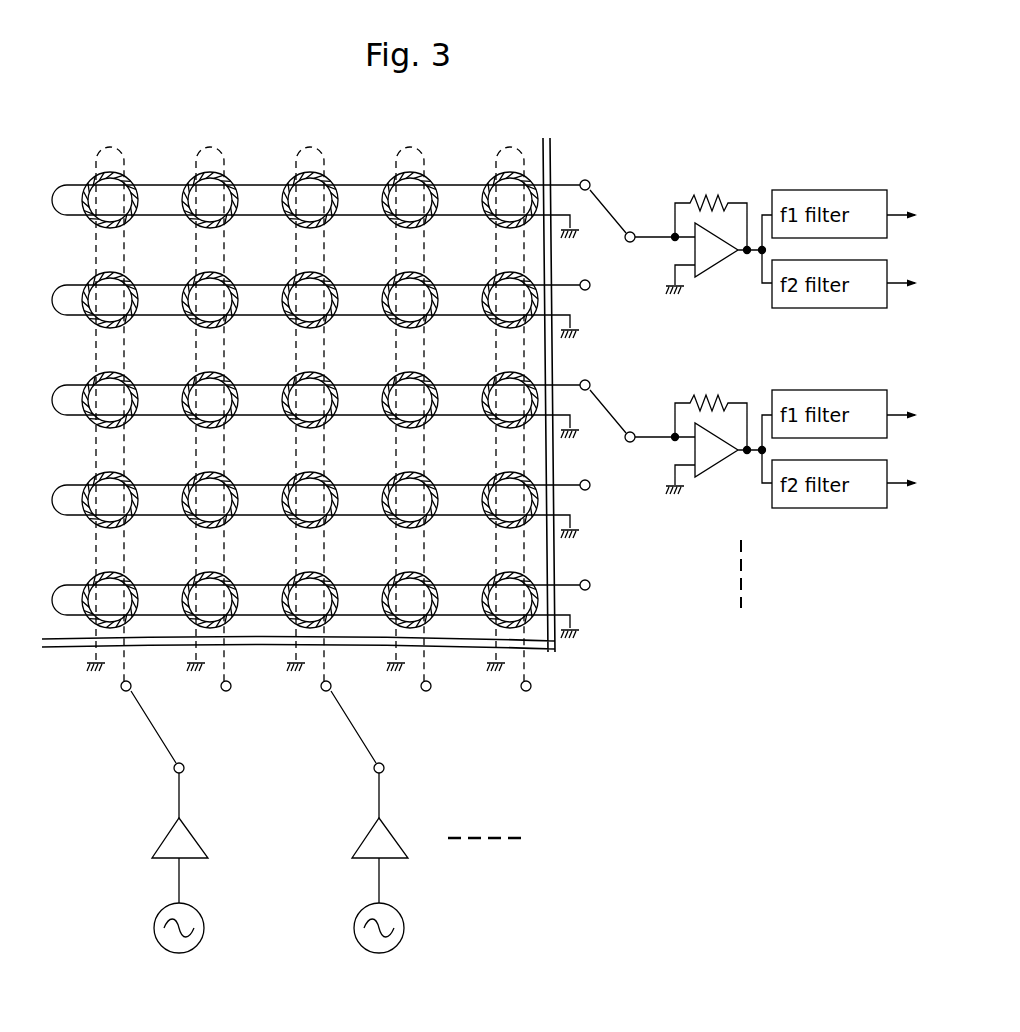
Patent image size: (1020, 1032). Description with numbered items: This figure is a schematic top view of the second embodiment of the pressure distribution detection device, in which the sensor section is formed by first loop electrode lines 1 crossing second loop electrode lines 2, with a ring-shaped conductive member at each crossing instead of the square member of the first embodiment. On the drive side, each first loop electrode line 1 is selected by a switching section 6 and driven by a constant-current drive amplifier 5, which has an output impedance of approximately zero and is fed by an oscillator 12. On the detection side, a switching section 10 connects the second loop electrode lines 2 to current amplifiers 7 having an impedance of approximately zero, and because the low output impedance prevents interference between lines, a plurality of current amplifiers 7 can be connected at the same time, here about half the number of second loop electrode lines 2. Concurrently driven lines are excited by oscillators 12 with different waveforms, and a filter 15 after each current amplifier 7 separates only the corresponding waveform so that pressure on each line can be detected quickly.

The first loop electrode lines 1 is at (115, 147).
The second loop electrode lines 2 is at (55, 187).
The constant-current drive amplifier 5 is at (158, 840).
The switching section 6 is at (137, 704).
The current amplifier 7 is at (715, 182).
The switching section 10 is at (596, 193).
The oscillator 12 is at (205, 928).
The filter 15 is at (822, 189).